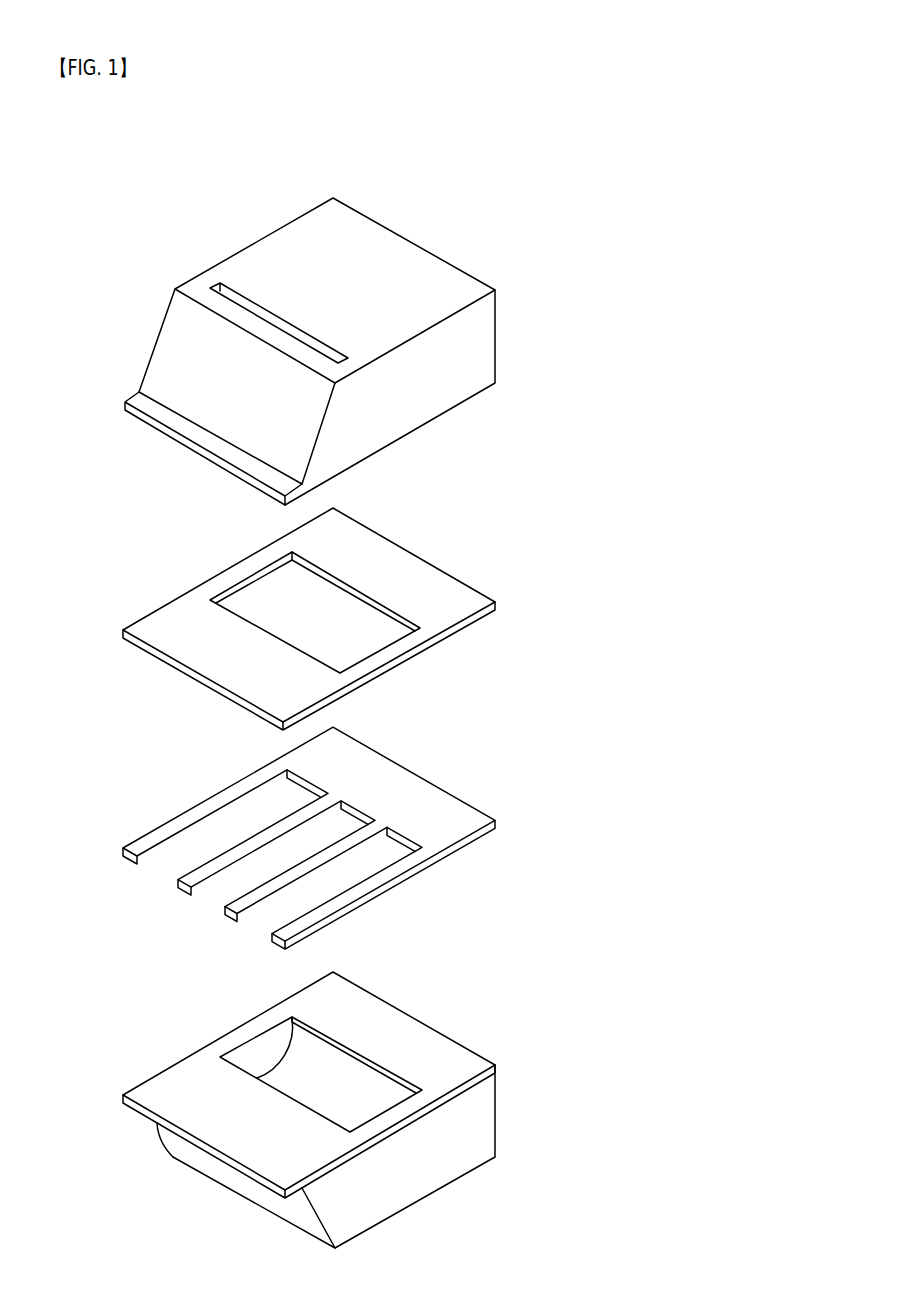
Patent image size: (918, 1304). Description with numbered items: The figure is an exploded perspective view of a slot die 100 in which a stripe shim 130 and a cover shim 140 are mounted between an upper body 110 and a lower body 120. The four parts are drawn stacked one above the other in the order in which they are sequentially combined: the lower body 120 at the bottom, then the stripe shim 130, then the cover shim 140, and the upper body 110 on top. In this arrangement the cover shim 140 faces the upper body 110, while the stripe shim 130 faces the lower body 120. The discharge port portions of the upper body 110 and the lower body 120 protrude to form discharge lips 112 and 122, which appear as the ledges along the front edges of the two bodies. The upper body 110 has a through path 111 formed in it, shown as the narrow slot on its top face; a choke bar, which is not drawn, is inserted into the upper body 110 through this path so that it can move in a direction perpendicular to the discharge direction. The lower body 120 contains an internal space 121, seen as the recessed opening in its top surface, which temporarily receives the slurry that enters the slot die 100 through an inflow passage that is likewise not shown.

The slot die 100 is at (351, 128).
The upper body 110 is at (310, 351).
The through path 111 is at (233, 302).
The discharge lip 112 is at (123, 404).
The cover shim 140 is at (495, 605).
The stripe shim 130 is at (495, 822).
The lower body 120 is at (310, 1110).
The internal space 121 is at (315, 1088).
The discharge lip 122 is at (123, 1097).